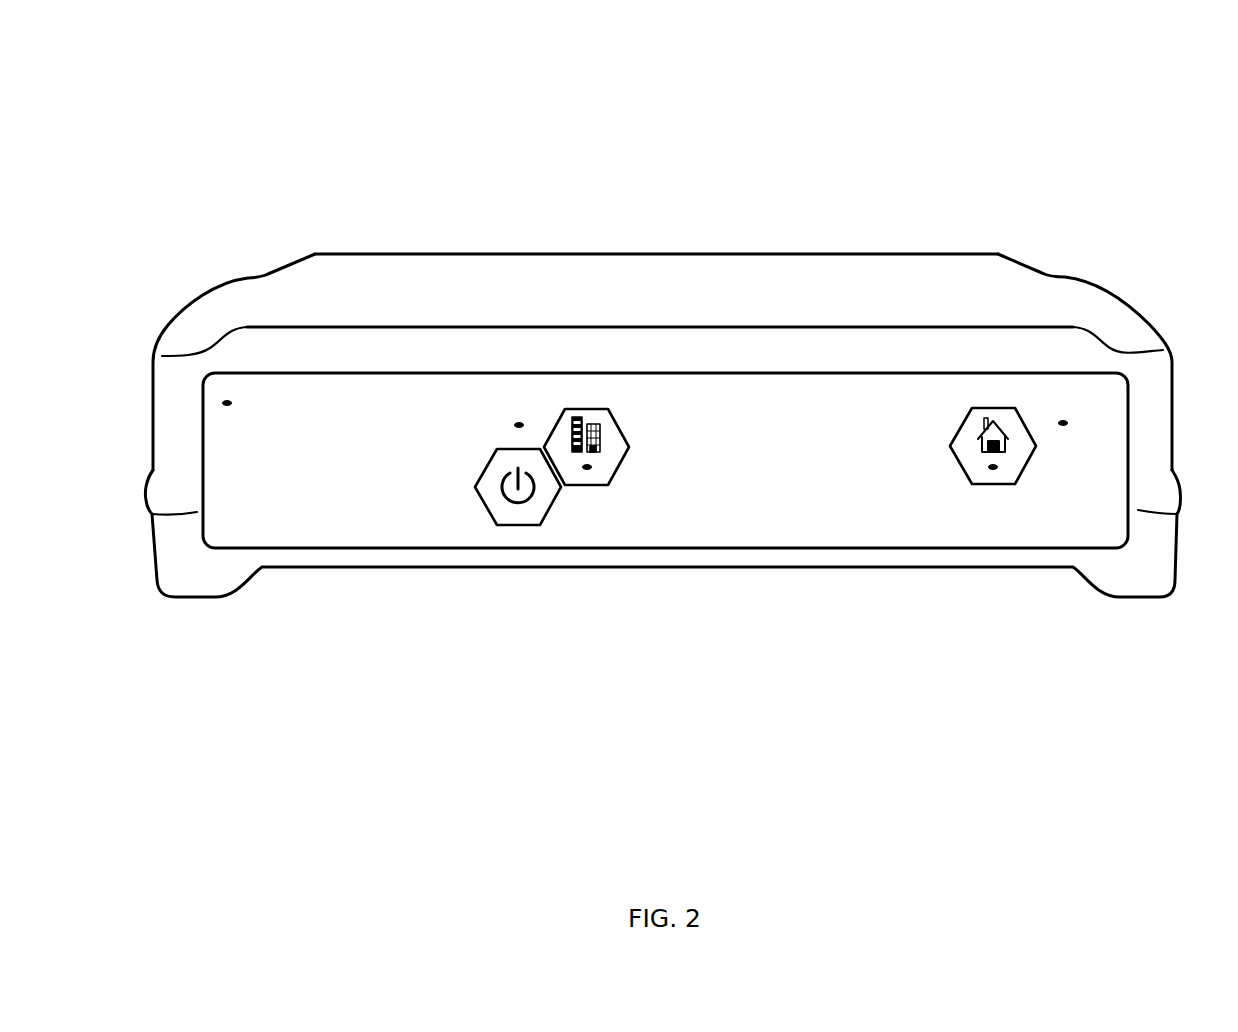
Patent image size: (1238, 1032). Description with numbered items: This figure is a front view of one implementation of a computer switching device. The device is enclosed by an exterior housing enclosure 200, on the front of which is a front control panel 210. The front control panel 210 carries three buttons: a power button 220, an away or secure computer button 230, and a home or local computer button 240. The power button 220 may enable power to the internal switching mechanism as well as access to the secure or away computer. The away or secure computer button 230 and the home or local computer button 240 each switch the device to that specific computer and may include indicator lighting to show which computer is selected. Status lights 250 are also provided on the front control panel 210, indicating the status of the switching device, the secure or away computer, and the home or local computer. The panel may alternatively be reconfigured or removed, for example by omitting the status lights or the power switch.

The exterior housing enclosure 200 is at (152, 422).
The front control panel 210 is at (292, 548).
The power button 220 is at (517, 525).
The away or secure computer button 230 is at (619, 473).
The home or local computer button 240 is at (960, 467).
The status lights 250 is at (227, 403).